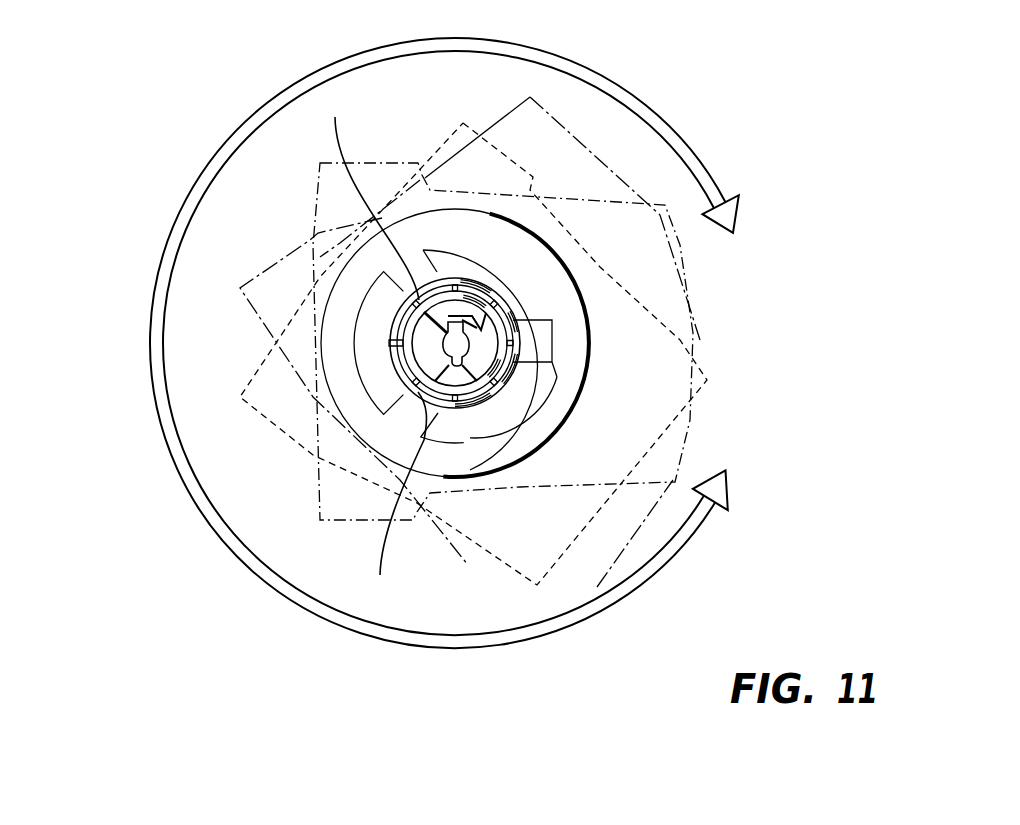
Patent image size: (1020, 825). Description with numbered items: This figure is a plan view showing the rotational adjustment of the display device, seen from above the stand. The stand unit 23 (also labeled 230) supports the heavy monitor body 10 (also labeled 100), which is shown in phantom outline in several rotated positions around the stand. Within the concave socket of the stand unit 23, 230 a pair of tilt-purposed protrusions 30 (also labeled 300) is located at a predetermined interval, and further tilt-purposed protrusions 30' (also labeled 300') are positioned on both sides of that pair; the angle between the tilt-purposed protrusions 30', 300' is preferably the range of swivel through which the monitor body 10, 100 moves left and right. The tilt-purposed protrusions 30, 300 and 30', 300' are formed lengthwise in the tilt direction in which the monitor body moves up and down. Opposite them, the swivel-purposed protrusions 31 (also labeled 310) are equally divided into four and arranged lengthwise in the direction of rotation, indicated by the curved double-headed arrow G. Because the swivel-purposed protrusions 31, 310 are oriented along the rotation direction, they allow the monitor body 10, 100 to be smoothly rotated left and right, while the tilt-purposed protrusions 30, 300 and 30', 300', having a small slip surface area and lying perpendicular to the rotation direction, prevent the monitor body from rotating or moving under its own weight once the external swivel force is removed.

The rotation direction G is at (690, 151).
The stand unit 23 is at (565, 401).
The ring member 230 is at (552, 417).
The tilt-purposed protrusions 30 is at (297, 359).
The arc-shaped member 300 is at (297, 359).
The swivel-purposed protrusions 31 is at (619, 334).
The engaging projection 310 is at (478, 414).
The tilt-purposed protrusions 30' is at (394, 348).
The arm member 300' is at (394, 348).
The monitor body 10 is at (397, 342).
The housing 100 is at (375, 292).